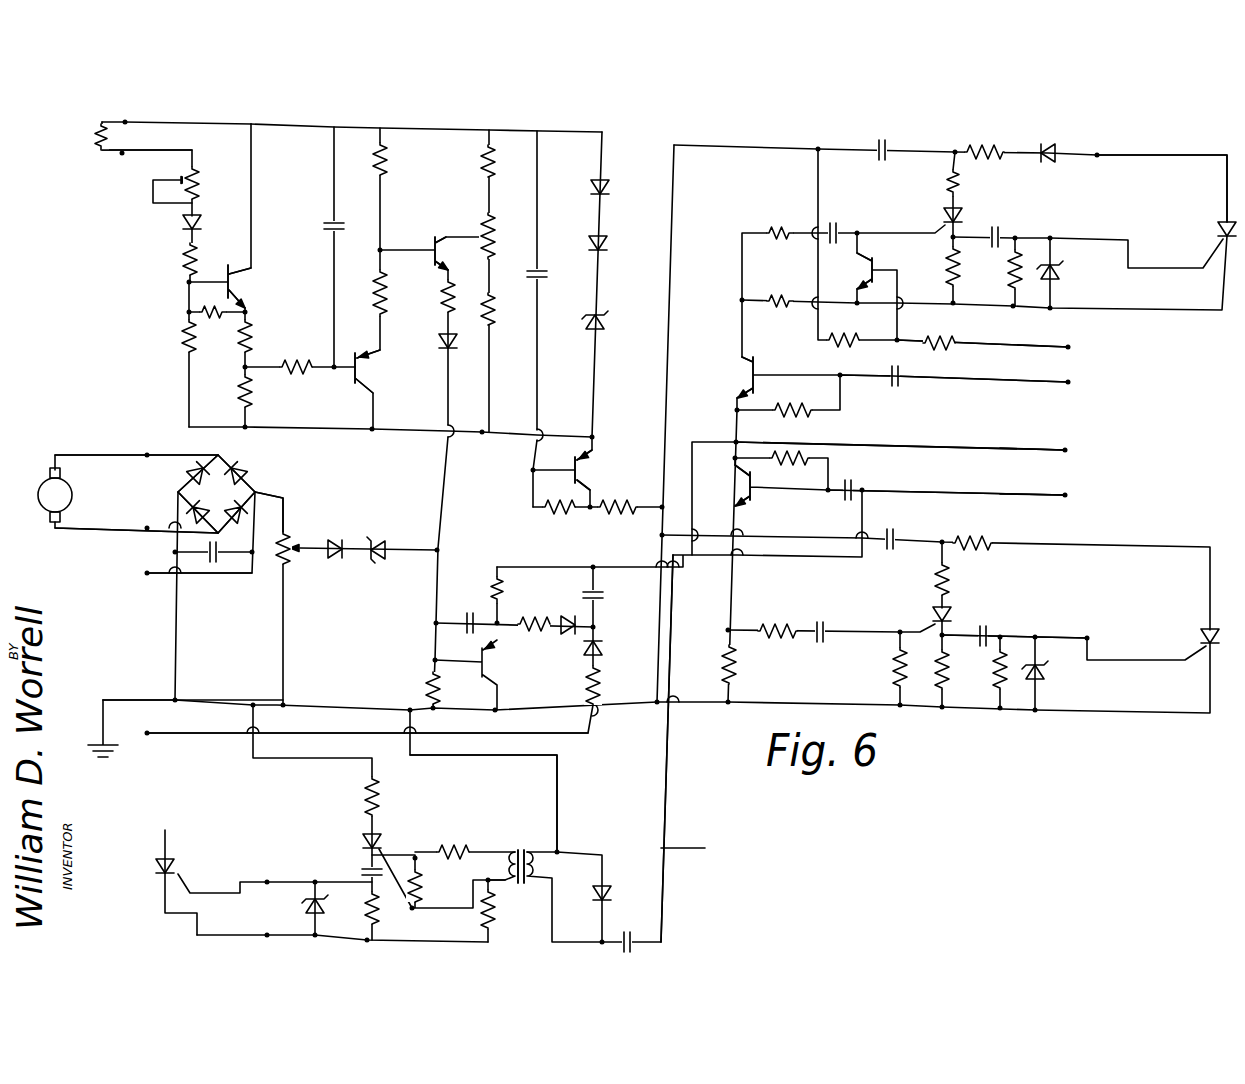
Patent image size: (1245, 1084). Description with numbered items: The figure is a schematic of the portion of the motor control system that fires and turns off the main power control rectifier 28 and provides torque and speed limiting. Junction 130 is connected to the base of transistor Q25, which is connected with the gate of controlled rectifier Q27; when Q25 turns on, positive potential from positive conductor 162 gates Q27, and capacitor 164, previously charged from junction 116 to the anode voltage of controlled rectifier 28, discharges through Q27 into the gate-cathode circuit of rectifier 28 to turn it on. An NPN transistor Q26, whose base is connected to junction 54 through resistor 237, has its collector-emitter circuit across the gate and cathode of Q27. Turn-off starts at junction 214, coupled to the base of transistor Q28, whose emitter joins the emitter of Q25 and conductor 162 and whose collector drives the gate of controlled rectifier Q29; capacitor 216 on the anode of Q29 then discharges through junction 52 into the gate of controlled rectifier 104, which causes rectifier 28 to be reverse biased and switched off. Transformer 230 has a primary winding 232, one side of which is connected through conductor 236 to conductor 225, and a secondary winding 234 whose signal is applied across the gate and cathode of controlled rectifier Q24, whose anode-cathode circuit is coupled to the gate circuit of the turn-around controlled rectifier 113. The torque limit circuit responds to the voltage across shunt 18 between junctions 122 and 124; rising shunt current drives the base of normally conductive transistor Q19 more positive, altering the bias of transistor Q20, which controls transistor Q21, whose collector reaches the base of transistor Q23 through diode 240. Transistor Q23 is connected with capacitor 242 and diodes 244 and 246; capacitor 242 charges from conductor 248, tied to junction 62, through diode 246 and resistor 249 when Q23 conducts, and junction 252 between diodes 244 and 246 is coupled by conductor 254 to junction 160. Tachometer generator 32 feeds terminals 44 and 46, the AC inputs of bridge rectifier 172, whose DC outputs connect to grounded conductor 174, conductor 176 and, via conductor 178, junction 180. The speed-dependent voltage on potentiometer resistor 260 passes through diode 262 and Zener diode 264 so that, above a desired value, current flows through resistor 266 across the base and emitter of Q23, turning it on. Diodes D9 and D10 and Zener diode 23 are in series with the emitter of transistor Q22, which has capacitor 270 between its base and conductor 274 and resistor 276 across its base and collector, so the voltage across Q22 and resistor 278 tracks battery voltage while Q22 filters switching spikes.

The shunt 18 is at (95, 133).
The junction 122 is at (125, 122).
The junction 124 is at (122, 153).
The conductor 274 is at (430, 128).
The transistor Q19 is at (230, 282).
The transistor Q20 is at (362, 380).
The transistor Q21 is at (435, 240).
The diode 240 is at (446, 333).
The capacitor 270 is at (536, 278).
The diode D9 is at (605, 188).
The diode D10 is at (604, 242).
The Zener diode 23 is at (598, 326).
The transistor Q22 is at (582, 462).
The resistor 278 is at (616, 506).
The resistor 276 is at (542, 508).
The conductor 248 is at (540, 567).
The resistor 249 is at (530, 622).
The diode 246 is at (567, 618).
The capacitor 242 is at (598, 592).
The junction 252 is at (598, 645).
The diode 244 is at (598, 668).
The transistor Q23 is at (486, 664).
The resistor 266 is at (432, 685).
The Zener diode 264 is at (383, 543).
The diode 262 is at (338, 556).
The potentiometer resistor 260 is at (290, 570).
The conductor 176 is at (285, 500).
The bridge rectifier 172 is at (235, 476).
The terminal 44 is at (147, 455).
The tachometer generator 32 is at (45, 478).
The terminal 46 is at (147, 528).
The junction 180 is at (147, 573).
The conductor 178 is at (213, 560).
The grounded conductor 174 is at (215, 700).
The junction 160 is at (147, 733).
The turn-around controlled rectifier 113 is at (175, 862).
The controlled rectifier Q24 is at (365, 838).
The secondary winding 234 is at (488, 852).
The transformer 230 is at (520, 848).
The primary winding 232 is at (540, 866).
The conductor 254 is at (570, 756).
The conductor 236 is at (661, 848).
The junction 116 is at (1097, 155).
The capacitor 164 is at (882, 160).
The controlled rectifier Q27 is at (960, 217).
The main power control rectifier 28 is at (1221, 224).
The NPN transistor Q26 is at (870, 270).
The transistor Q25 is at (750, 362).
The junction 54 is at (1068, 347).
The resistor 237 is at (950, 345).
The junction 130 is at (1068, 382).
The positive conductor 162 is at (950, 446).
The junction 62 is at (1065, 450).
The conductor 225 is at (990, 491).
The junction 214 is at (1065, 495).
The capacitor 216 is at (896, 538).
The transistor Q28 is at (760, 495).
The controlled rectifier Q29 is at (958, 614).
The controlled rectifier 104 is at (1205, 628).
The junction 52 is at (1087, 638).